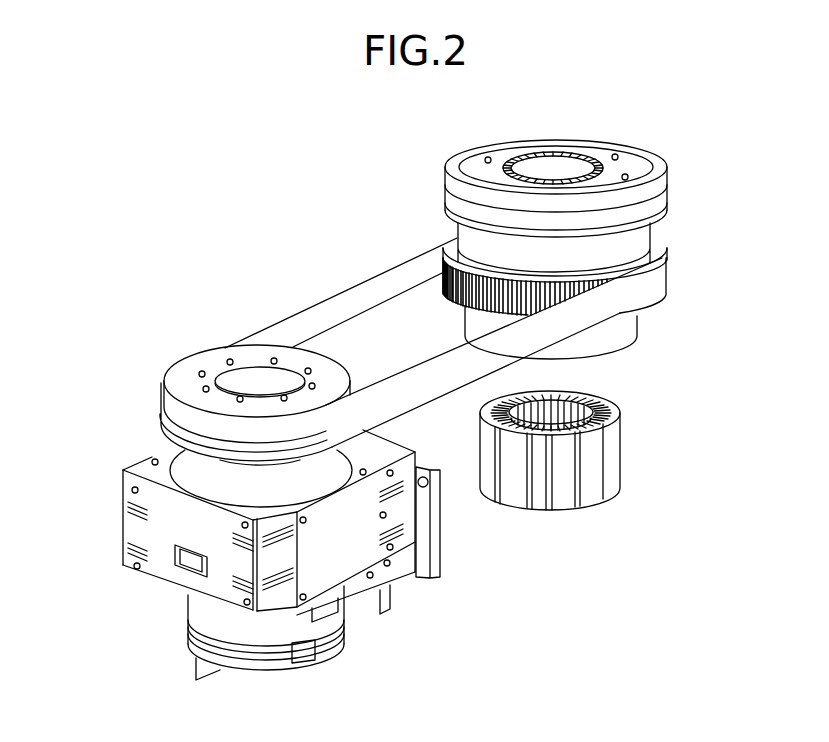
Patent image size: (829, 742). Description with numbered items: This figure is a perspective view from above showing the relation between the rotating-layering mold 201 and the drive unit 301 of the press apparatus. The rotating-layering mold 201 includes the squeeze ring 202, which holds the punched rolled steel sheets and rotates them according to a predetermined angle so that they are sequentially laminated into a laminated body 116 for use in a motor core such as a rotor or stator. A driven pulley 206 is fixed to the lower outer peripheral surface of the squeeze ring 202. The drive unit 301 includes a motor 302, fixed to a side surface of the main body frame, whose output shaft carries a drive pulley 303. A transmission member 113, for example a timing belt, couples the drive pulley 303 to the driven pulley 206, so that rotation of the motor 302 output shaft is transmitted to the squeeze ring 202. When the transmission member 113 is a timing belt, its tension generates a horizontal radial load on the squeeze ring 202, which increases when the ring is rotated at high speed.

The transmission member 113 is at (363, 287).
The laminated body 116 is at (598, 457).
The rotating-layering mold 201 is at (546, 244).
The squeeze ring 202 is at (650, 192).
The driven pulley 206 is at (660, 248).
The drive unit 301 is at (255, 564).
The motor 302 is at (367, 632).
The drive pulley 303 is at (190, 372).